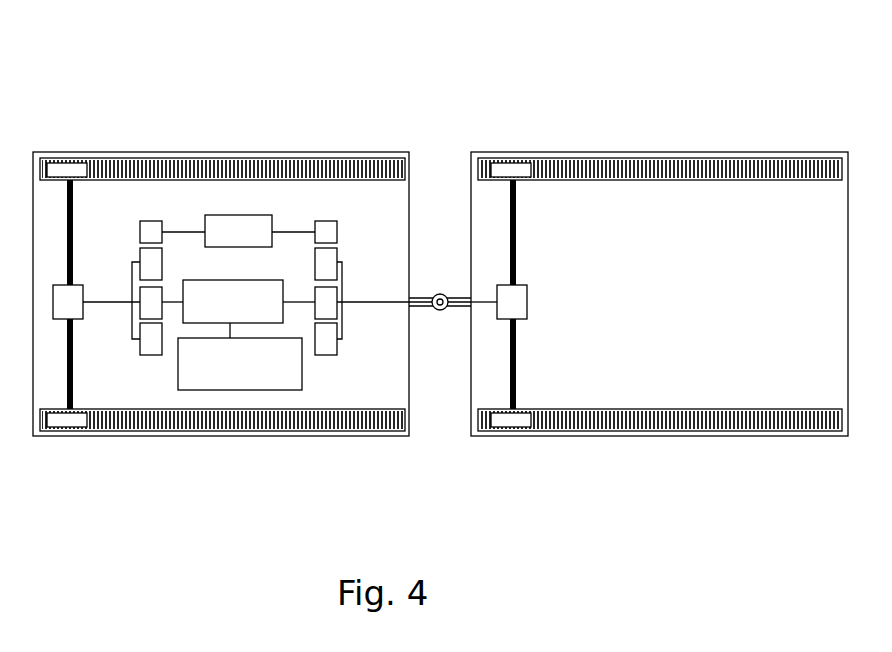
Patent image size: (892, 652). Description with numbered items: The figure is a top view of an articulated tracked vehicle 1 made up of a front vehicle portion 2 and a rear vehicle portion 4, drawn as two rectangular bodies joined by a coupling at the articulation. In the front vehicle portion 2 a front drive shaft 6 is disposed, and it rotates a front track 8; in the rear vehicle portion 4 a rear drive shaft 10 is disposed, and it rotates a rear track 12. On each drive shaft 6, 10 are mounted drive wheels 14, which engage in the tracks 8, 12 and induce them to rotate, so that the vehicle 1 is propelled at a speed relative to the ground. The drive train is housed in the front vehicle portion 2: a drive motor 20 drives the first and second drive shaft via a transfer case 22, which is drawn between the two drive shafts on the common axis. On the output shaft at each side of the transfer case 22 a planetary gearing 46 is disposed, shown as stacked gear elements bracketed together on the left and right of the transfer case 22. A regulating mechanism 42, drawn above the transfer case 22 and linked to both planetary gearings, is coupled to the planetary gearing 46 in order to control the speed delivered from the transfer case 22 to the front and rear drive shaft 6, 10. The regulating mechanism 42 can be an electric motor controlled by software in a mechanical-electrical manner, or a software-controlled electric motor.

The articulated tracked vehicle 1 is at (493, 84).
The front vehicle portion 2 is at (265, 152).
The rear vehicle portion 4 is at (705, 152).
The front drive shaft 6 is at (74, 188).
The front track 8 is at (217, 167).
The rear drive shaft 10 is at (515, 190).
The rear track 12 is at (803, 167).
The drive wheels 14 is at (72, 170).
The drive motor 20 is at (302, 376).
The transfer case 22 is at (255, 280).
The regulating mechanism 42 is at (264, 214).
The planetary gearing 46 is at (133, 331).